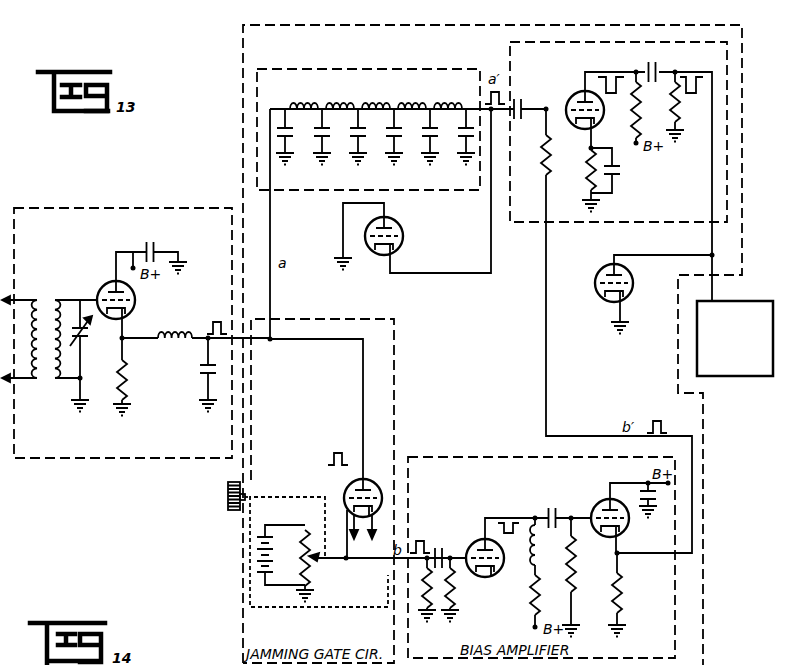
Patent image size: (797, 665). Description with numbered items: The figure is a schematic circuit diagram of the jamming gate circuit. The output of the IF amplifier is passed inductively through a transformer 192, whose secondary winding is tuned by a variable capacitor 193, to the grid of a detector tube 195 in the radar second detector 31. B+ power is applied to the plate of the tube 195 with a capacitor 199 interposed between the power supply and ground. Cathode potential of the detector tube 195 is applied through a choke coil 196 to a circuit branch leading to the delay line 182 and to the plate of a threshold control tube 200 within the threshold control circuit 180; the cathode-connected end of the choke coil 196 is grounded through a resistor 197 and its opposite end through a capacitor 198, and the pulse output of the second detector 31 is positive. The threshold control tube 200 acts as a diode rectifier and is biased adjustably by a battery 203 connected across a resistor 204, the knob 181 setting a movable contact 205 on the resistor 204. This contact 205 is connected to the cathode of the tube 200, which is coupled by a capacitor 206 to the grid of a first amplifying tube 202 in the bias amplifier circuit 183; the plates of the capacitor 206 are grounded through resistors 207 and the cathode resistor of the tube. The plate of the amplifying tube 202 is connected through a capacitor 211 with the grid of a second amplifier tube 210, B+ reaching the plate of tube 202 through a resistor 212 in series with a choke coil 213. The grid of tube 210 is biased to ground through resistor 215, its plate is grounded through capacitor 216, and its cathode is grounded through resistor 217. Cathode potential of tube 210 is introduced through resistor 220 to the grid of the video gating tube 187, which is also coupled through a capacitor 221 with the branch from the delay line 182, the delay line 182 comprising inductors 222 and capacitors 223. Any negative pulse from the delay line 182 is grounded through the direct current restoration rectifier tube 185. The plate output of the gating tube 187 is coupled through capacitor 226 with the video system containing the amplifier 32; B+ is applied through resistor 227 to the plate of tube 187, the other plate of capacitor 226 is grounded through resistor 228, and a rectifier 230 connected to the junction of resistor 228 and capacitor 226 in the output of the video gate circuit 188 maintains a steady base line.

The second detector 31 is at (138, 459).
The video amplifier 32 is at (727, 377).
The threshold control circuit 180 is at (332, 608).
The knob 181 is at (228, 505).
The delay line 182 is at (412, 191).
The bias amplifier circuit 183 is at (676, 623).
The rectifier tube 185 is at (404, 238).
The video gating tube 187 is at (598, 126).
The video gate circuit 188 is at (622, 223).
The transformer 192 is at (45, 299).
The variable capacitor 193 is at (84, 345).
The detector tube 195 is at (136, 306).
The choke coil 196 is at (178, 345).
The resistor 197 is at (127, 380).
The capacitor 198 is at (200, 372).
The capacitor 199 is at (157, 249).
The threshold control tube 200 is at (343, 486).
The first amplifying tube 202 is at (481, 538).
The battery 203 is at (257, 551).
The resistor 204 is at (316, 533).
The movable contact 205 is at (318, 560).
The capacitor 206 is at (440, 546).
The resistor 207 is at (426, 606).
The second amplifier tube 210 is at (629, 523).
The capacitor 211 is at (553, 511).
The resistor 212 is at (541, 592).
The choke coil 213 is at (538, 556).
The resistor 215 is at (577, 562).
The capacitor 216 is at (657, 500).
The resistor 217 is at (623, 596).
The resistor 220 is at (551, 160).
The capacitor 221 is at (522, 105).
The inductors 222 is at (306, 99).
The capacitors 223 is at (286, 132).
The capacitor 226 is at (662, 68).
The resistor 227 is at (641, 100).
The resistor 228 is at (678, 124).
The rectifier 230 is at (632, 276).